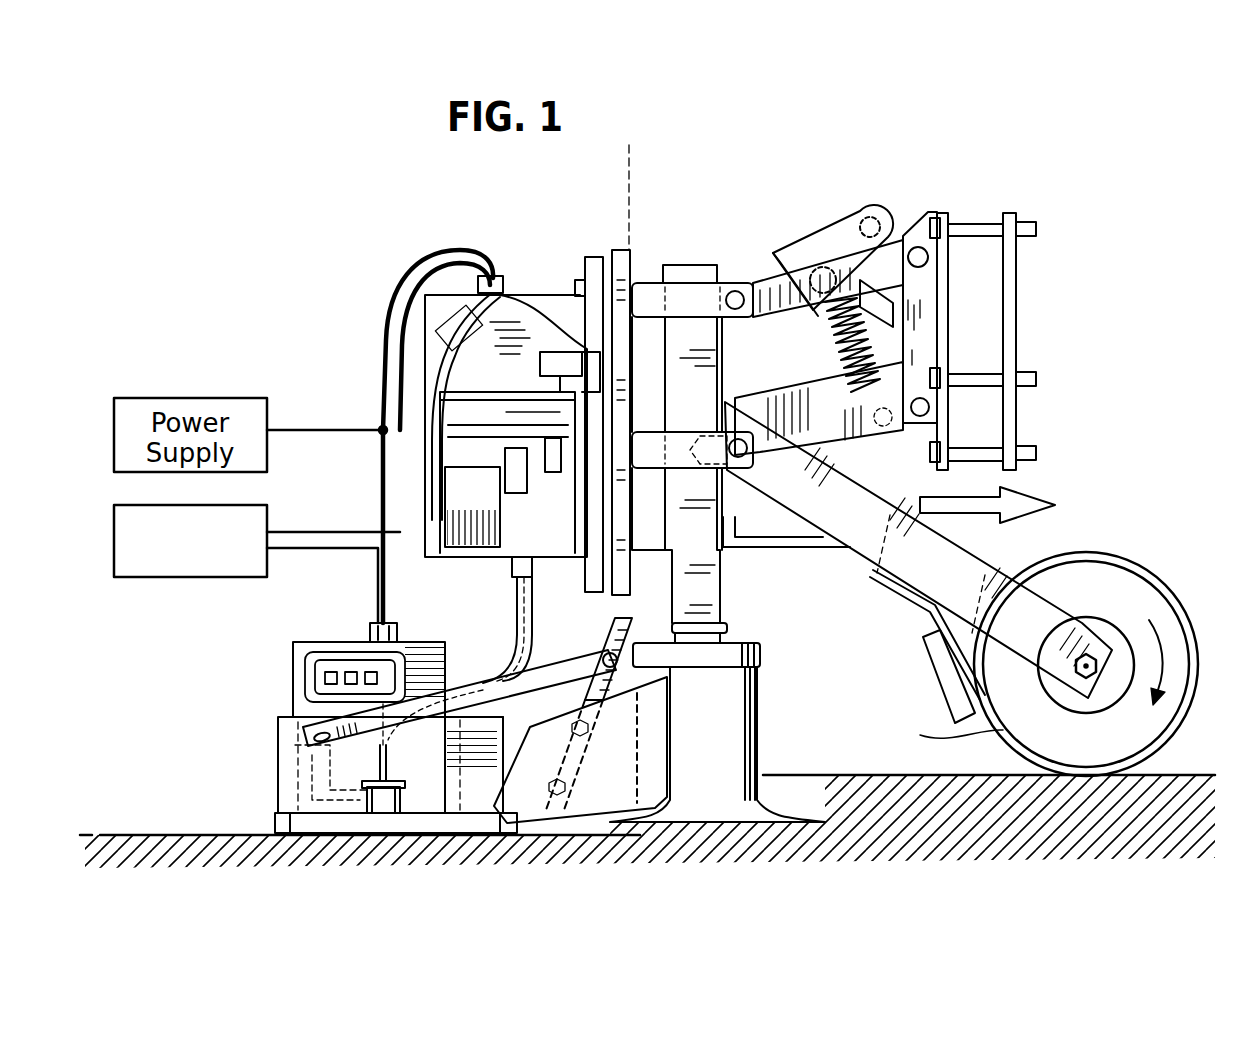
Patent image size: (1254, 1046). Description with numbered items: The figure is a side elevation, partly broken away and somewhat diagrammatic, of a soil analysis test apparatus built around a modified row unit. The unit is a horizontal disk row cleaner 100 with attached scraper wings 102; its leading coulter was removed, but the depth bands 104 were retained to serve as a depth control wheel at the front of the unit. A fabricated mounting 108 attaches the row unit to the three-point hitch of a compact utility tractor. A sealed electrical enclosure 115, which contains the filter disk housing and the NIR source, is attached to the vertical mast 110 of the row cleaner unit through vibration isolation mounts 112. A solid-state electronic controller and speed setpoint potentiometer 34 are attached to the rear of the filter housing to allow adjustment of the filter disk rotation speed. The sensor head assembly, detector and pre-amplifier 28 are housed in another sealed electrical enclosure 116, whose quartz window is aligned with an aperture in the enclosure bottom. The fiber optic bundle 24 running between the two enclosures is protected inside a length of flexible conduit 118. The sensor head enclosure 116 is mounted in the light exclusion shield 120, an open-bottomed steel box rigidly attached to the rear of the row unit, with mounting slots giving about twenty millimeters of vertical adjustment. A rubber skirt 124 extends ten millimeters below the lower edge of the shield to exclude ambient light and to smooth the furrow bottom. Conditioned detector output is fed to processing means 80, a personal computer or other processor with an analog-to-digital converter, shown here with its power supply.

The fiber optic bundle 24 is at (388, 780).
The pre-amplifier 28 is at (303, 670).
The solid-state electronic controller and speed setpoint potentiometer 34 is at (453, 493).
The processing means 80 is at (184, 578).
The horizontal disk row cleaner 100 is at (786, 668).
The scraper wings 102 is at (652, 775).
The depth bands 104 is at (1000, 738).
The mounting 108 is at (1013, 130).
The vertical mast 110 is at (694, 266).
The vibration isolation mounts 112 is at (592, 257).
The sealed electrical enclosure 115 is at (547, 292).
The sealed electrical enclosure (sensor head enclosure) 116 is at (343, 640).
The flexible conduit 118 is at (512, 606).
The light exclusion shield 120 is at (278, 728).
The rubber skirt 124 is at (283, 811).